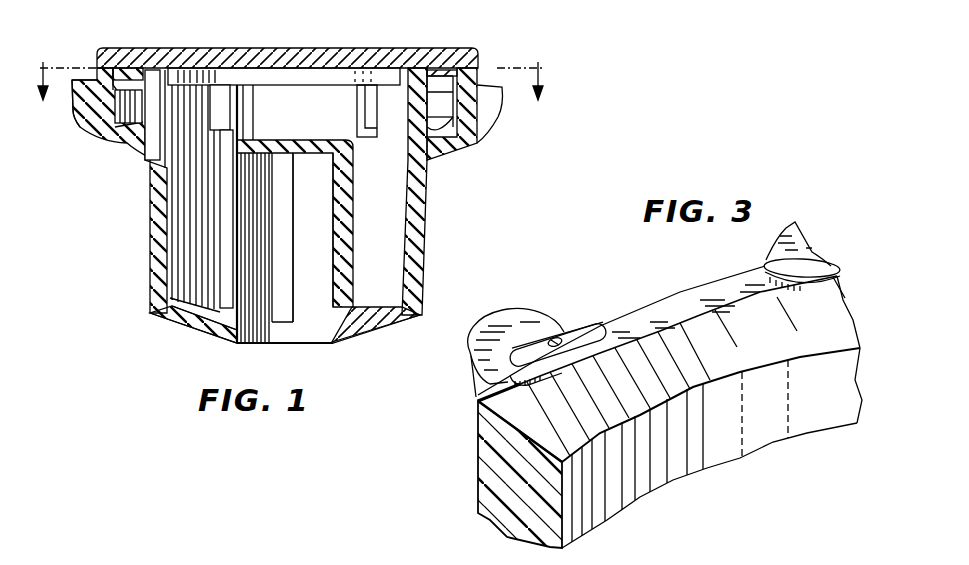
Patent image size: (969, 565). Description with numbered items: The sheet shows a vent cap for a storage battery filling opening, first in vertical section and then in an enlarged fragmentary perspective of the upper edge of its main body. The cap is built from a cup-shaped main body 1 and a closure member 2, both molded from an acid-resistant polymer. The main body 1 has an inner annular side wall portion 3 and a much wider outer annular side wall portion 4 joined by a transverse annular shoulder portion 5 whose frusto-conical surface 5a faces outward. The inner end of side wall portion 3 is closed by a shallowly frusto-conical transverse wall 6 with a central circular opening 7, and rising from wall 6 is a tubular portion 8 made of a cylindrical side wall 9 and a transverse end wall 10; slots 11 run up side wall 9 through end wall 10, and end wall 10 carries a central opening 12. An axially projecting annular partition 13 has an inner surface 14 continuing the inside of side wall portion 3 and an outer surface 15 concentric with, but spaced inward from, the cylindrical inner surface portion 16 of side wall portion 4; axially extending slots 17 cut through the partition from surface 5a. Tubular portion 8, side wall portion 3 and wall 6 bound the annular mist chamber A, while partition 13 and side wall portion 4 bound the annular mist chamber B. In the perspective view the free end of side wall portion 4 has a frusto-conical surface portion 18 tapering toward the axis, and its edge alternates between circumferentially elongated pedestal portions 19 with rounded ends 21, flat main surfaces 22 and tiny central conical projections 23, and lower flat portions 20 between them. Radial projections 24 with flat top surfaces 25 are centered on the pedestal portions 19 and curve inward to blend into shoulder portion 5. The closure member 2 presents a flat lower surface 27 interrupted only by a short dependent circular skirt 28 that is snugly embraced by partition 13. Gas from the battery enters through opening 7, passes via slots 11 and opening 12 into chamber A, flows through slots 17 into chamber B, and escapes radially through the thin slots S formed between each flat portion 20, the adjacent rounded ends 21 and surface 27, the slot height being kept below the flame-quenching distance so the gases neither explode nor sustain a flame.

In FIG. 1, the main body 1 is at (138, 312).
In FIG. 1, the closure member 2 is at (345, 22).
In FIG. 1, the inner annular side wall portion 3 is at (152, 250).
In FIG. 1, the outer annular side wall portion 4 is at (97, 66).
In FIG. 1, the annular shoulder portion 5 is at (130, 150).
In FIG. 1, the frusto-conical surface 5a is at (110, 140).
In FIG. 1, the transverse wall 6 is at (197, 323).
In FIG. 1, the circular opening 7 is at (262, 337).
In FIG. 1, the upstanding tubular portion 8 is at (352, 240).
In FIG. 1, the cylindrical side wall 9 is at (347, 268).
In FIG. 1, the transverse end wall 10 is at (337, 140).
In FIG. 1, the slots 11 is at (225, 253).
In FIG. 1, the circular opening 12 is at (285, 117).
In FIG. 1, the annular partition 13 is at (420, 68).
In FIG. 1, the inner surface 14 is at (432, 110).
In FIG. 1, the outer surface 15 is at (428, 123).
In FIG. 1, the cylindrical inner surface portion 16 is at (413, 143).
In FIG. 3, the cylindrical inner surface portion 16 is at (842, 380).
In FIG. 1, the axially extending slots 17 is at (162, 127).
In FIG. 1, the frusto-conical surface portion 18 is at (450, 72).
In FIG. 3, the frusto-conical surface portion 18 is at (827, 300).
In FIG. 3, the pedestal portions 19 is at (548, 338).
In FIG. 3, the flat portions 20 is at (673, 300).
In FIG. 3, the rounded ends 21 is at (603, 320).
In FIG. 3, the flat main surfaces 22 is at (580, 340).
In FIG. 3, the conical projection 23 is at (549, 338).
In FIG. 1, the radial projections 24 is at (78, 123).
In FIG. 3, the radial projections 24 is at (483, 385).
In FIG. 1, the flat top surfaces 25 is at (78, 80).
In FIG. 3, the flat top surfaces 25 is at (522, 330).
In FIG. 1, the flat lower surface 27 is at (290, 78).
In FIG. 1, the dependent circular skirt 28 is at (208, 168).
In FIG. 1, the annular mist chamber A is at (390, 240).
In FIG. 1, the annular mist chamber B is at (103, 130).
In FIG. 1, the slot S is at (137, 66).